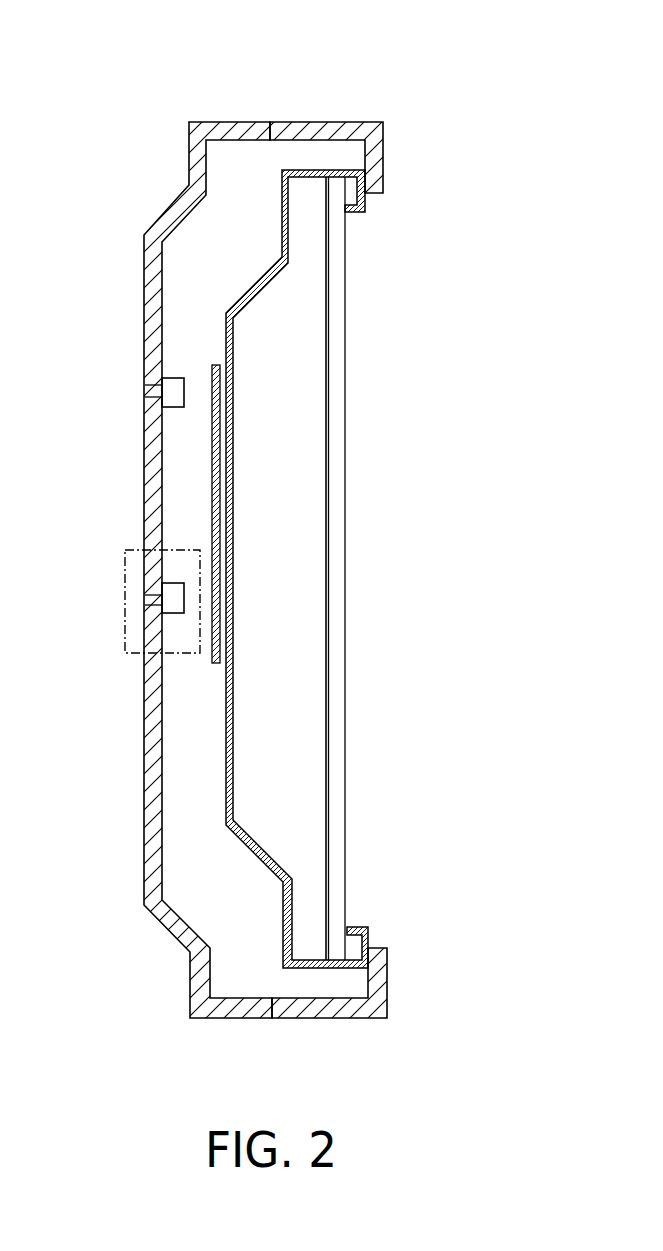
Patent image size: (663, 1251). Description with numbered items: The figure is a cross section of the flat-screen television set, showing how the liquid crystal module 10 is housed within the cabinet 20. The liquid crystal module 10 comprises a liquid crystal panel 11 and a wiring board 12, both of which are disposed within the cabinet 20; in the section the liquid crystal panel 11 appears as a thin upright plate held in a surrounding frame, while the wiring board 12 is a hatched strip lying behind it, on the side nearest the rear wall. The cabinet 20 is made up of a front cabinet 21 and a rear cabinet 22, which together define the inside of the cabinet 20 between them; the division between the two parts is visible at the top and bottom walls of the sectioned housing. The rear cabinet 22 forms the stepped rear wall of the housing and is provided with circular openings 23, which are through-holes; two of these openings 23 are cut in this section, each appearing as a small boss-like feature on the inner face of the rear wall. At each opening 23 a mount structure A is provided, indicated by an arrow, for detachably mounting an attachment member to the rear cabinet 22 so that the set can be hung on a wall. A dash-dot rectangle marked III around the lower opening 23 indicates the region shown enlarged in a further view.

The liquid crystal module 10 is at (323, 569).
The liquid crystal panel 11 is at (347, 530).
The wiring board 12 is at (222, 441).
The cabinet 20 is at (265, 509).
The front cabinet 21 is at (328, 531).
The rear cabinet 22 is at (244, 122).
The circular opening 23 is at (145, 393).
The mount structure A is at (184, 370).
The section indicator III is at (125, 645).